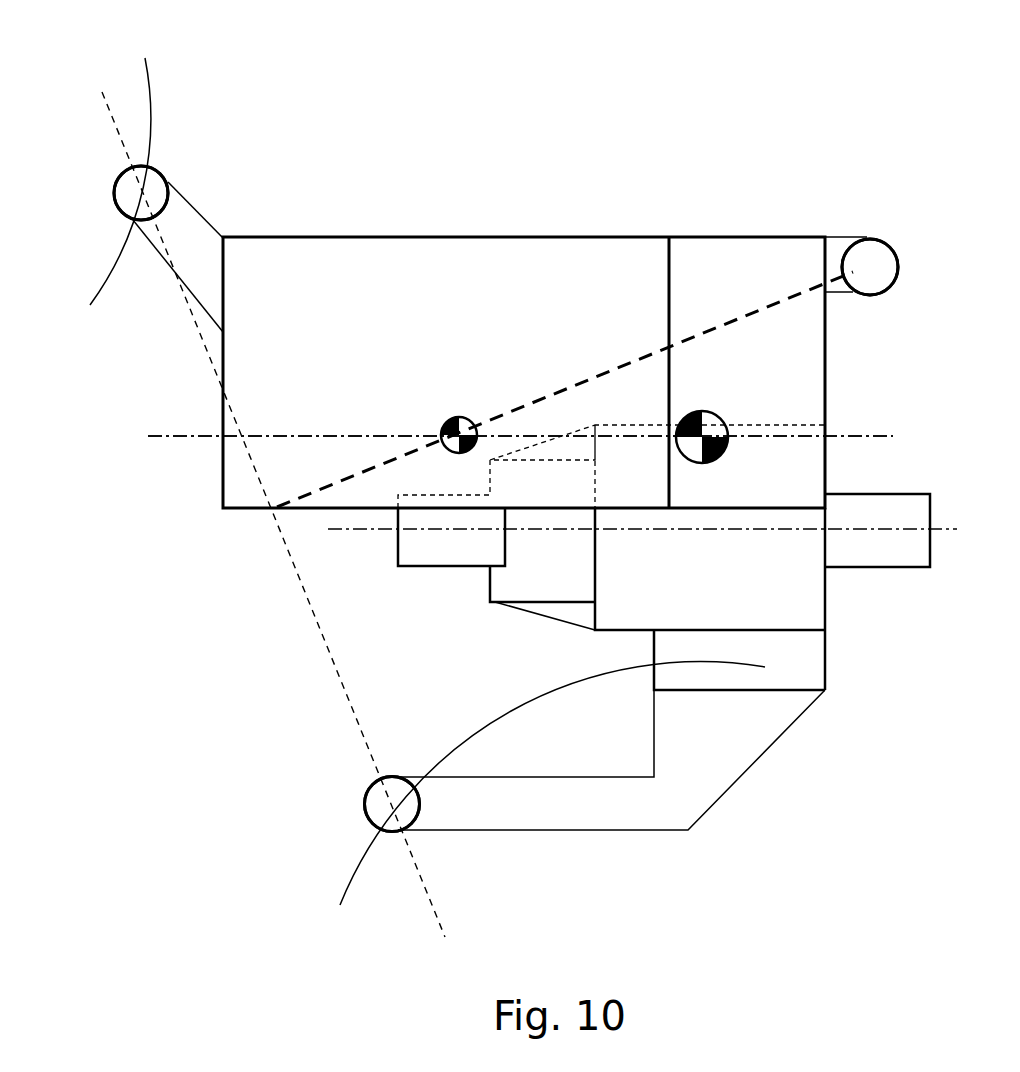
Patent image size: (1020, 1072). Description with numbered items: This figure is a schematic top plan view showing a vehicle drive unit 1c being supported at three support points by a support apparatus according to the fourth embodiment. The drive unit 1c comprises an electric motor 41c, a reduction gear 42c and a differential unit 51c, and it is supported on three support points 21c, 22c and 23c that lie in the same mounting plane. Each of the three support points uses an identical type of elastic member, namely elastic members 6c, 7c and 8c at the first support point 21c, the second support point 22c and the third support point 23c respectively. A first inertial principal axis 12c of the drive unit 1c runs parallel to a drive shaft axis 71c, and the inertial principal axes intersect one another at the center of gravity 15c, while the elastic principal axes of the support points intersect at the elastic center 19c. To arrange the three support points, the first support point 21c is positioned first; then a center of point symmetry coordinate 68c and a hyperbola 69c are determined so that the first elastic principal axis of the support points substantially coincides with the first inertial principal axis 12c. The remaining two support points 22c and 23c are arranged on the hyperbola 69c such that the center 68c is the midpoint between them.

The drive unit 1c is at (505, 185).
The electric motor 41c is at (317, 237).
The reduction gear 42c is at (707, 237).
The hyperbola 69c is at (148, 100).
The elastic member 6c is at (160, 167).
The first support point 21c is at (142, 190).
The elastic member 7c is at (870, 239).
The second support point 22c is at (862, 268).
The first inertial principal axis 12c is at (217, 437).
The center of point symmetry coordinate 68c is at (275, 510).
The elastic center 19c is at (461, 417).
The center of gravity 15c is at (713, 411).
The drive shaft axis 71c is at (343, 528).
The differential unit 51c is at (825, 622).
The third support point 23c is at (365, 803).
The elastic member 8c is at (415, 803).